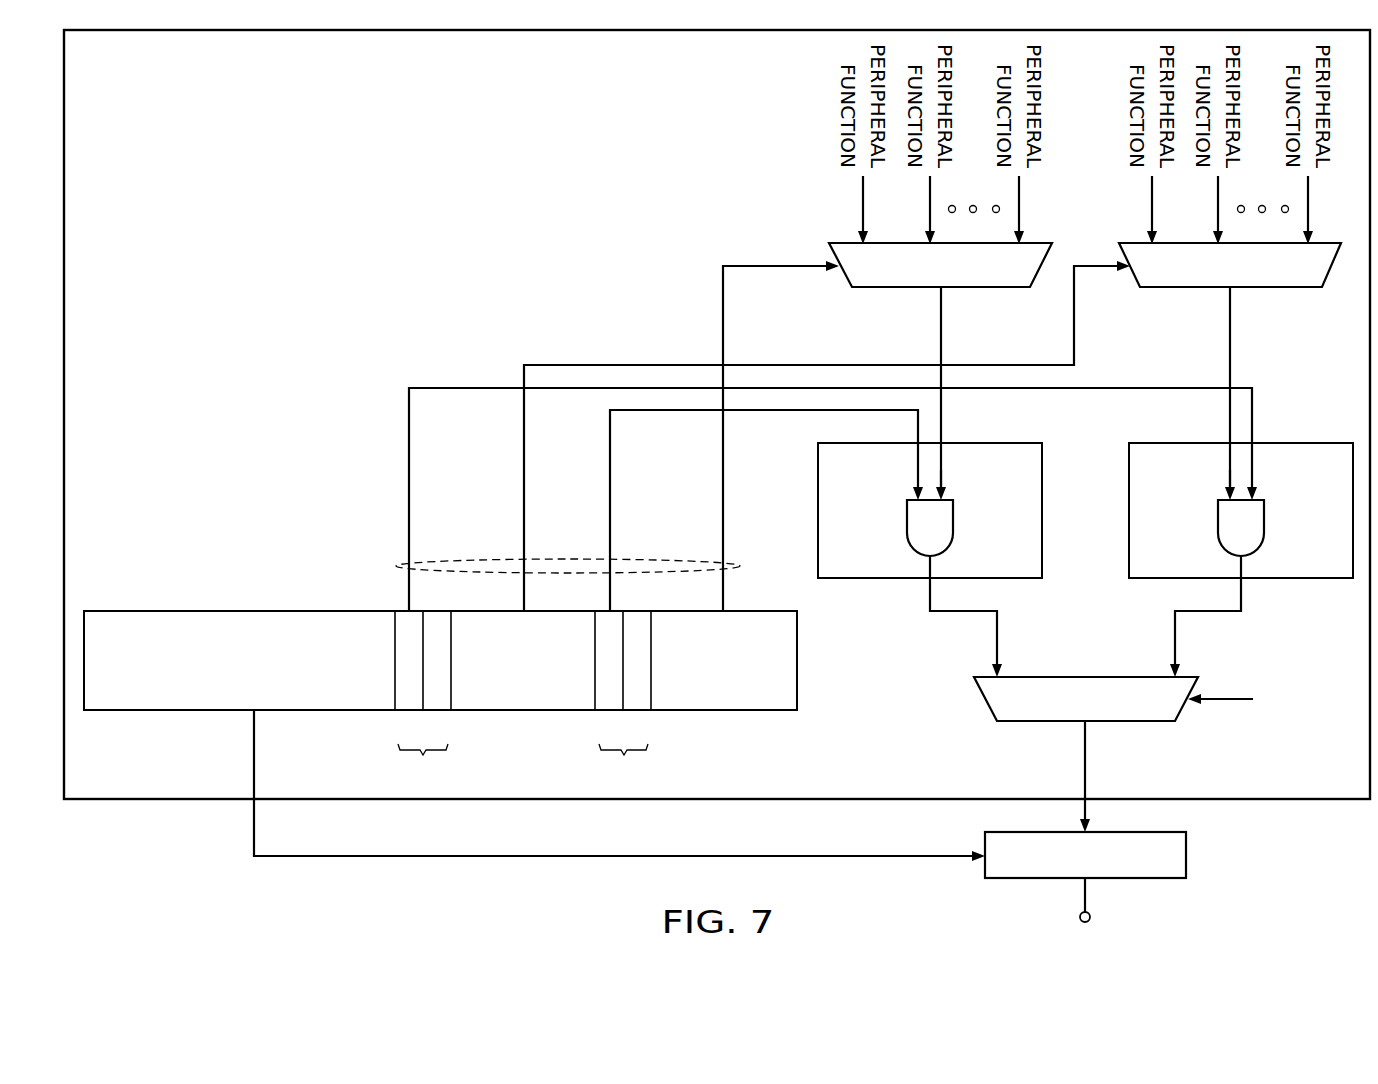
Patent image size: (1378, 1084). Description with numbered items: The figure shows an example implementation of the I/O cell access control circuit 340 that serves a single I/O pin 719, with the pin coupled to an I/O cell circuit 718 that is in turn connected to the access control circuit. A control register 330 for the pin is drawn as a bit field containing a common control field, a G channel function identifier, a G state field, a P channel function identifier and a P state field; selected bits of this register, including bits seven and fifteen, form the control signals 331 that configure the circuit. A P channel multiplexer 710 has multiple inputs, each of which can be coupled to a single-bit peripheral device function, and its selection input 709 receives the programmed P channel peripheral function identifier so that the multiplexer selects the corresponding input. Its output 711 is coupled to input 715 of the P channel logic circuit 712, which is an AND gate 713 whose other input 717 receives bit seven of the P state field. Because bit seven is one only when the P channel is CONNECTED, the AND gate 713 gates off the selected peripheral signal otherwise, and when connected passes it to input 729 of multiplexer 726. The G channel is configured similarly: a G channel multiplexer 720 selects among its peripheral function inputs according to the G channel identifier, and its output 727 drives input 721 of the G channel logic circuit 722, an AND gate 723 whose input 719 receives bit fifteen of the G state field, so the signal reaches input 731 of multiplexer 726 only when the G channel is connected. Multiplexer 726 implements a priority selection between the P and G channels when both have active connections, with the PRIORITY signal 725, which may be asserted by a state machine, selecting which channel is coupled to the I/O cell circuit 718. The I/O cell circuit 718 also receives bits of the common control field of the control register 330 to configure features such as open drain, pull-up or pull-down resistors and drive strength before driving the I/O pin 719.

The I/O cell access control circuit 340 is at (430, 245).
The control register 330 is at (810, 673).
The control signals 331 is at (395, 567).
The selection input 709 is at (840, 276).
The P channel multiplexer 710 is at (908, 289).
The output 711 is at (945, 291).
The G channel multiplexer 720 is at (1198, 289).
The output 727 is at (1235, 291).
The P channel logic circuit 712 is at (881, 537).
The AND gate 713 is at (954, 527).
The input 715 is at (953, 497).
The input 717 is at (906, 497).
The G channel logic circuit 722 is at (1193, 537).
The AND gate 723 is at (1265, 527).
The I/O pin 719 is at (1264, 497).
The input 721 is at (1217, 497).
The input 729 is at (991, 670).
The input 731 is at (1181, 670).
The PRIORITY signal 725 is at (1220, 703).
The multiplexer 726 is at (1118, 723).
The I/O cell circuit 718 is at (1128, 880).